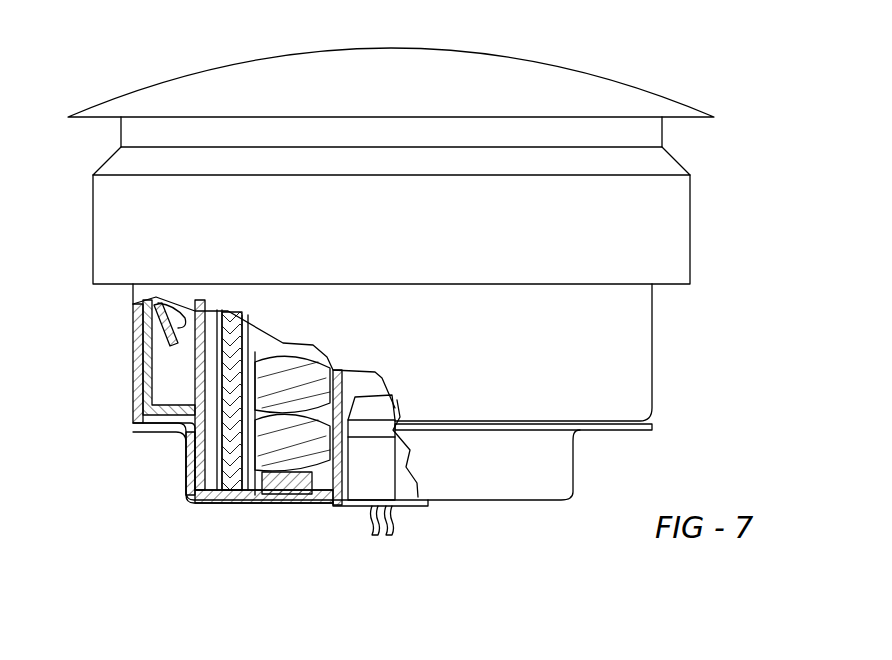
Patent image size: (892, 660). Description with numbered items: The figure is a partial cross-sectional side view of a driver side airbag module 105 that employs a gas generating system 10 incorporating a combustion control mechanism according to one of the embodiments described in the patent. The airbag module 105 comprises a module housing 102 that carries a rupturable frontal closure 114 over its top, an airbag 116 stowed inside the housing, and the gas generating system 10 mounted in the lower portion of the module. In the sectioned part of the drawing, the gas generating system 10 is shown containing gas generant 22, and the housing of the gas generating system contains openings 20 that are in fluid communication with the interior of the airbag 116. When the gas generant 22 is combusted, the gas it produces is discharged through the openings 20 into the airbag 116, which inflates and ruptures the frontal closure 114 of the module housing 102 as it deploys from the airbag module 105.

The rupturable frontal closure 114 is at (226, 66).
The driver side airbag module 105 is at (648, 76).
The module housing 102 is at (641, 225).
The airbag 116 is at (132, 340).
The openings 20 is at (205, 372).
The gas generant 22 is at (302, 380).
The gas generating system 10 is at (248, 474).